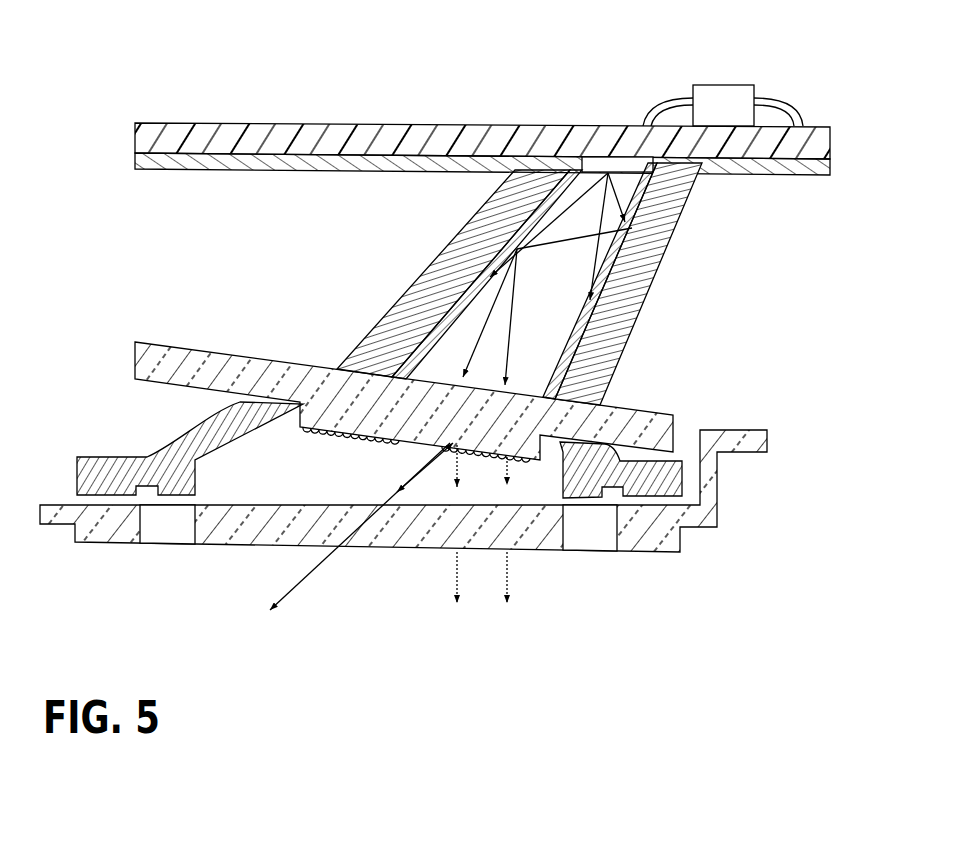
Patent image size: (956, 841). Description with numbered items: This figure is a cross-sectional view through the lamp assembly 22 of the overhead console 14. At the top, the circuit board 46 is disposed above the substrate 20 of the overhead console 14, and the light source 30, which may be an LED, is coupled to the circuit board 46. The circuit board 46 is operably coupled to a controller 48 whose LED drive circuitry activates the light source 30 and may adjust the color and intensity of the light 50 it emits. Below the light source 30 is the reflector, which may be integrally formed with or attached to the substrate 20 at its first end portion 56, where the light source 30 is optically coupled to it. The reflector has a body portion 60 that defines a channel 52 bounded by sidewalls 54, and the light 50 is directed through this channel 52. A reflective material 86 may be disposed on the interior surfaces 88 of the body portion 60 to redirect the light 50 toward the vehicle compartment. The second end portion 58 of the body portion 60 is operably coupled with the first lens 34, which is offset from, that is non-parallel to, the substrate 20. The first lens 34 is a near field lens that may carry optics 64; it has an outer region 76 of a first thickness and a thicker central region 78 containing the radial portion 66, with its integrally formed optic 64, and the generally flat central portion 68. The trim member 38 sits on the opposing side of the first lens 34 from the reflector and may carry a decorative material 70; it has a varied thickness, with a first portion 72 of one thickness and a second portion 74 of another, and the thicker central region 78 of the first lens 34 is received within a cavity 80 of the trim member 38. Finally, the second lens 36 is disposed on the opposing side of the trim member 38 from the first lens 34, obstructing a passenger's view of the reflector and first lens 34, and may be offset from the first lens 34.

The overhead console 14 is at (235, 88).
The circuit board 46 is at (417, 140).
The substrate 20 is at (173, 167).
The light source 30 is at (612, 165).
The first end portion 56 is at (578, 166).
The controller 48 is at (722, 100).
The first lens 34 is at (653, 428).
The outer region 76 is at (170, 338).
The channel 52 is at (412, 336).
The light 50 is at (657, 277).
The interior surfaces 88 is at (443, 343).
The sidewalls 54 is at (437, 283).
The reflective material 86 is at (492, 212).
The body portion 60 is at (448, 238).
The lamp assembly 22 is at (652, 340).
The second end portion 58 is at (530, 386).
The trim member 38 is at (105, 469).
The decorative material 70 is at (172, 436).
The first portion 72 is at (120, 453).
The second portion 74 is at (683, 478).
The second lens 36 is at (543, 533).
The cavity 80 is at (292, 407).
The central region 78 is at (398, 423).
The central portion 68 is at (412, 437).
The optics 64 is at (448, 446).
The radial portion 66 is at (493, 458).